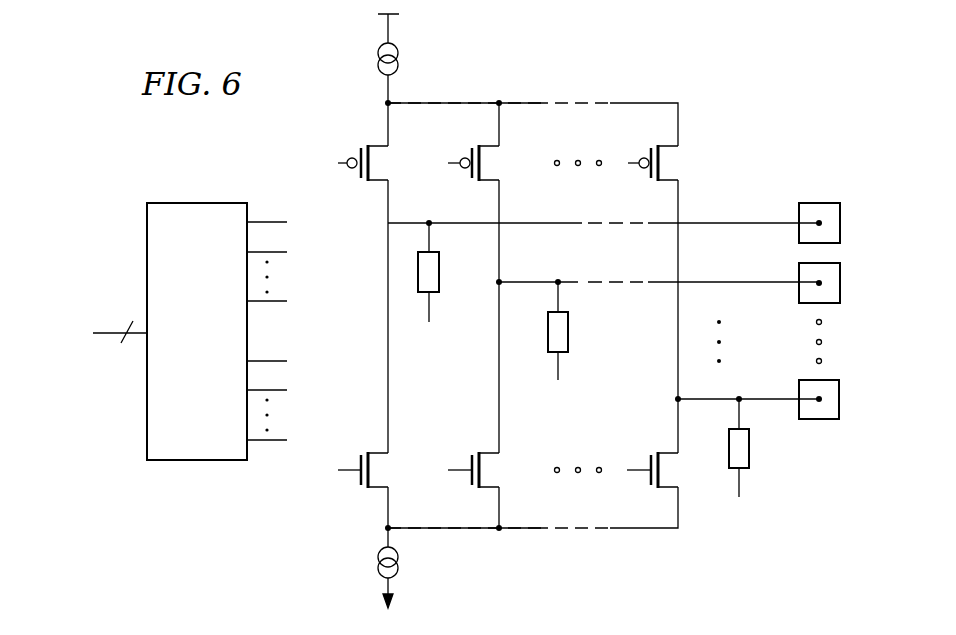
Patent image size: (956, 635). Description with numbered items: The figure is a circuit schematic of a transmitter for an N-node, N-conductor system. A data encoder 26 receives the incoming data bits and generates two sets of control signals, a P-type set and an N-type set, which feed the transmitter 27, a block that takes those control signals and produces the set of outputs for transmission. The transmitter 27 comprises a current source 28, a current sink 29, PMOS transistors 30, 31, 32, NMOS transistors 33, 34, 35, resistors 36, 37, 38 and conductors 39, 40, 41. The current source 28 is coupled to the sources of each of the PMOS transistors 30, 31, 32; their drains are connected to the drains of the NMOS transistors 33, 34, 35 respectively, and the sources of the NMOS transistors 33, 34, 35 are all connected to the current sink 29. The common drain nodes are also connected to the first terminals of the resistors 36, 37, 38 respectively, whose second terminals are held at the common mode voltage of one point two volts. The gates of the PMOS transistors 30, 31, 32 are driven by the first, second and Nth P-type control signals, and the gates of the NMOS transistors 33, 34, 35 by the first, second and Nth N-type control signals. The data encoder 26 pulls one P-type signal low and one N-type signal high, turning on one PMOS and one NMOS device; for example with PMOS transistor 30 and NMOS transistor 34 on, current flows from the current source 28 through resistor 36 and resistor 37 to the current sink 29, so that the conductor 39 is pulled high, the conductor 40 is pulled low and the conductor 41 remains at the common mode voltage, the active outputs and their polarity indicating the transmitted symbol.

The data encoder 26 is at (196, 203).
The transmitter 27 is at (604, 80).
The current source 28 is at (378, 56).
The current sink 29 is at (378, 570).
The PMOS transistor 30 is at (357, 172).
The PMOS transistor 31 is at (469, 172).
The PMOS transistor 32 is at (648, 172).
The NMOS transistor 33 is at (357, 479).
The NMOS transistor 34 is at (468, 479).
The NMOS transistor 35 is at (647, 479).
The resistor 36 is at (440, 268).
The resistor 37 is at (569, 328).
The resistor 38 is at (750, 452).
The conductor 39 is at (760, 222).
The conductor 40 is at (760, 281).
The conductor 41 is at (760, 398).